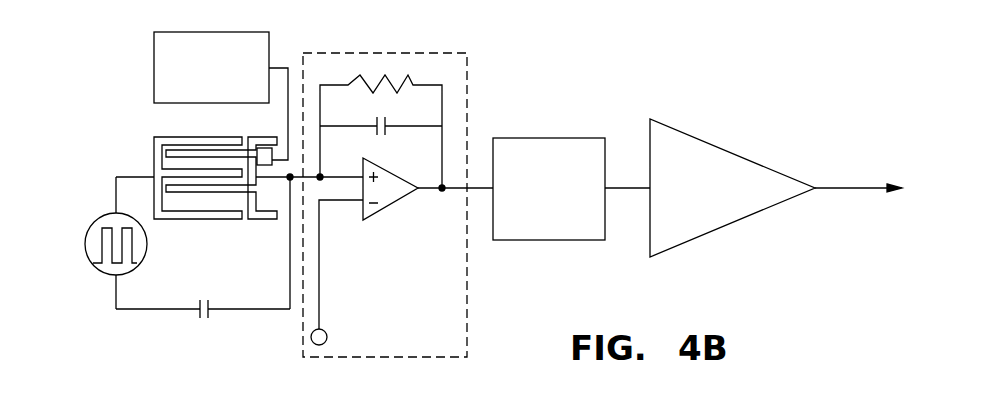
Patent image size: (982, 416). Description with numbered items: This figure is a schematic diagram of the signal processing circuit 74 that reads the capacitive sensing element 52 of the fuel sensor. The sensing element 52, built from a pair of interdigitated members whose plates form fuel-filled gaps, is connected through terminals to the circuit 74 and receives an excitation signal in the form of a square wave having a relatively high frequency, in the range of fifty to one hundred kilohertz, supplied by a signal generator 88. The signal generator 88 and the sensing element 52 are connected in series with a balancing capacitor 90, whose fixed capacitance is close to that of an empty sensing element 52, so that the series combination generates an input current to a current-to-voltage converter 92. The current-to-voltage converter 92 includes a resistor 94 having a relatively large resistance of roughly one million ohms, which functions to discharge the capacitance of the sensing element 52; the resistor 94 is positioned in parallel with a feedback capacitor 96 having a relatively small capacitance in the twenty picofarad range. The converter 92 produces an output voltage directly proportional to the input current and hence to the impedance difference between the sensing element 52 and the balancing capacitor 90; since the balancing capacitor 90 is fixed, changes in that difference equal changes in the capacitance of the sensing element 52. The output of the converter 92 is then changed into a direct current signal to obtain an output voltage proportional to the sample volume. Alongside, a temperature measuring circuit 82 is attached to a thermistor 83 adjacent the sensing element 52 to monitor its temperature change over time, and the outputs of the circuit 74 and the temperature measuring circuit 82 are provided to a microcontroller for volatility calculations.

The sensing element 52 is at (136, 148).
The circuit 74 is at (736, 283).
The temperature measuring circuit 82 is at (154, 82).
The thermistor 83 is at (267, 148).
The signal generator 88 is at (107, 267).
The balancing capacitor 90 is at (212, 312).
The current-to-voltage converter 92 is at (415, 182).
The resistor 94 is at (380, 78).
The feedback capacitor 96 is at (376, 121).